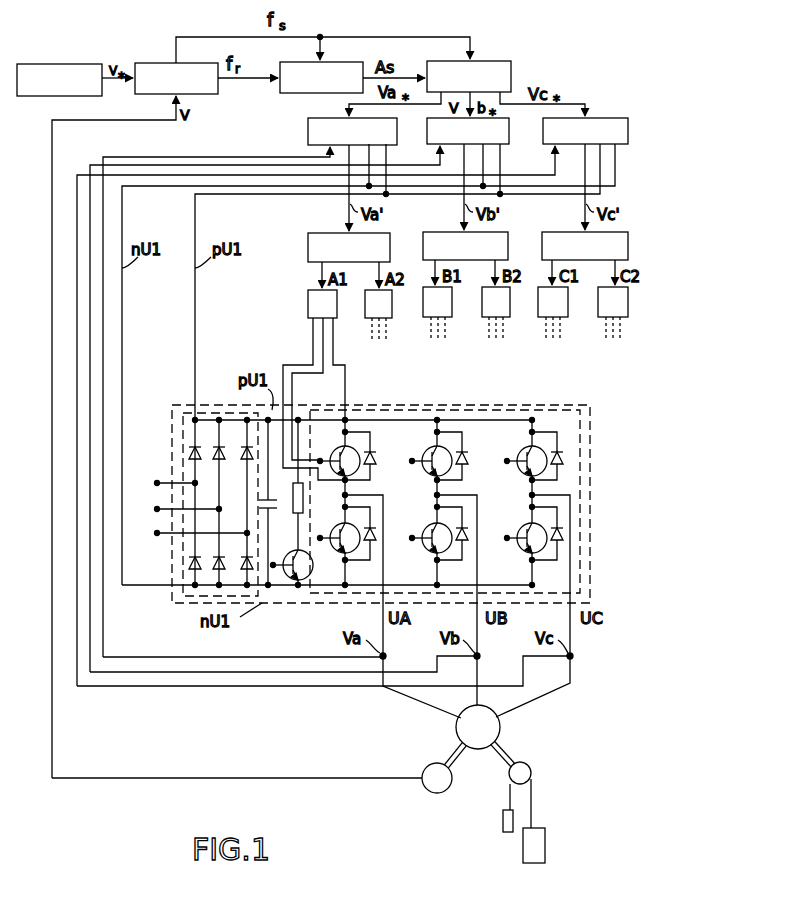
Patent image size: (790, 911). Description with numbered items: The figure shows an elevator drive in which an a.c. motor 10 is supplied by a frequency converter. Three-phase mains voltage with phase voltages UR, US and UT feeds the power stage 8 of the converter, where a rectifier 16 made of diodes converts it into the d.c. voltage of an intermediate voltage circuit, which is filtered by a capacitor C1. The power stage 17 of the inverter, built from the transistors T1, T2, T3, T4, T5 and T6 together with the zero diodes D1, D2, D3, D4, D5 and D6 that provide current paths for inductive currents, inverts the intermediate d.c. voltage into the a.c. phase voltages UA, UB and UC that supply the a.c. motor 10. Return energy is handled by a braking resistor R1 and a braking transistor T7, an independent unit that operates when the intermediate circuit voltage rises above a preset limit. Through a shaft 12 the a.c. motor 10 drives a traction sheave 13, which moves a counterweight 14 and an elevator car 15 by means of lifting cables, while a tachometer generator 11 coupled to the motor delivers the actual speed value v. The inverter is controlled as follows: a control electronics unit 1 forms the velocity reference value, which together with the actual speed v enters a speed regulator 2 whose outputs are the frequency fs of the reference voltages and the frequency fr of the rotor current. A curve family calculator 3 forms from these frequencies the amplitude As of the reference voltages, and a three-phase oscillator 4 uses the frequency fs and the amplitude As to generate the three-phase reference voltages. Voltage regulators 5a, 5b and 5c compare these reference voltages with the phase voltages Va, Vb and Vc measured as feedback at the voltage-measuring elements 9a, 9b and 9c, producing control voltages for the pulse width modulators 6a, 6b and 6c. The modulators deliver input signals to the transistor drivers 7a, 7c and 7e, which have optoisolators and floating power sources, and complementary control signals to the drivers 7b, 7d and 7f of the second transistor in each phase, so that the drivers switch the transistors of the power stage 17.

The control electronics unit 1 is at (68, 62).
The speed regulator 2 is at (168, 62).
The curve family calculator 3 is at (292, 61).
The three-phase oscillator 4 is at (440, 60).
The voltage regulator 5a is at (316, 146).
The voltage regulator 5b is at (435, 146).
The voltage regulator 5c is at (551, 146).
The pulse width modulator 6a is at (330, 233).
The pulse width modulator 6b is at (448, 232).
The pulse width modulator 6c is at (577, 232).
The transistor driver 7a is at (306, 319).
The transistor driver 7b is at (369, 319).
The transistor driver 7c is at (426, 317).
The transistor driver 7d is at (486, 317).
The transistor driver 7e is at (542, 317).
The transistor driver 7f is at (602, 317).
The power stage of the frequency converter 8 is at (216, 412).
The voltage-measuring element 9a is at (388, 658).
The voltage-measuring element 9b is at (482, 658).
The voltage-measuring element 9c is at (575, 658).
The a.c. motor 10 is at (501, 728).
The tachometer generator 11 is at (447, 790).
The shaft 12 is at (512, 757).
The traction sheave 13 is at (531, 778).
The counterweight 14 is at (503, 818).
The elevator car 15 is at (546, 845).
The rectifier 16 is at (192, 412).
The power stage of the inverter 17 is at (566, 405).
The transistor T1 is at (349, 448).
The transistor T2 is at (334, 532).
The transistor T3 is at (422, 471).
The transistor T4 is at (428, 528).
The transistor T5 is at (517, 471).
The transistor T6 is at (523, 528).
The braking transistor T7 is at (296, 592).
The zero diode D1 is at (371, 459).
The zero diode D2 is at (371, 537).
The zero diode D3 is at (464, 459).
The zero diode D4 is at (464, 537).
The zero diode D5 is at (560, 468).
The zero diode D6 is at (560, 548).
The braking resistor R1 is at (293, 505).
The capacitor C1 is at (275, 510).